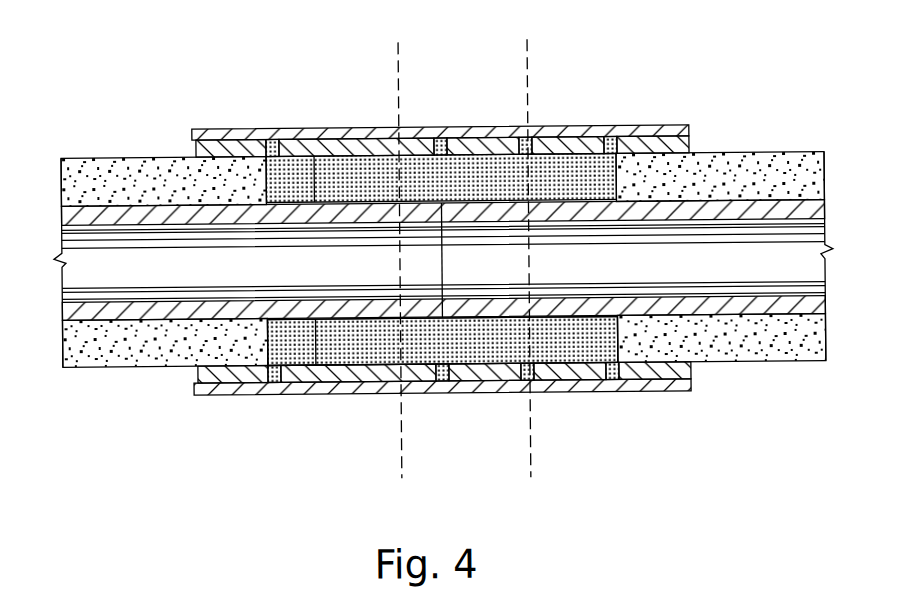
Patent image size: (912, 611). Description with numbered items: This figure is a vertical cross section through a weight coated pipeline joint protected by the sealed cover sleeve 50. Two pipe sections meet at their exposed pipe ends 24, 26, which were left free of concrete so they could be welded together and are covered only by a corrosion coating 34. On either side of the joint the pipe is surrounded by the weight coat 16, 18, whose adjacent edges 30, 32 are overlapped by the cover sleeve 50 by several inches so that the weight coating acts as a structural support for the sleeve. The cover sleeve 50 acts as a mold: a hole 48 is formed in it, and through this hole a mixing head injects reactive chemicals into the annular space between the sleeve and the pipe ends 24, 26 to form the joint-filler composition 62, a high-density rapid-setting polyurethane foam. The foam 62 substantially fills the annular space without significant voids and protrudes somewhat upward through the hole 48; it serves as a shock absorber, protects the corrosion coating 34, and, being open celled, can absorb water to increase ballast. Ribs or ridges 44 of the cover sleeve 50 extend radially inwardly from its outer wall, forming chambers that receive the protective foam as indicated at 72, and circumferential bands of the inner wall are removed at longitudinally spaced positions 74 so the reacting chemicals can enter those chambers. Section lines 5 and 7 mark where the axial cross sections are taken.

The weight coat 16 is at (117, 342).
The weight coat 18 is at (776, 348).
The pipe end 24 is at (293, 393).
The pipe end 26 is at (608, 392).
The edge of weight coat 30 is at (233, 180).
The edge of weight coat 32 is at (645, 180).
The corrosion coating 34 is at (333, 126).
The ribs or ridges 44 is at (387, 126).
The hole 48 is at (443, 150).
The sealed cover sleeve 50 is at (575, 127).
The joint-filler composition 62 is at (477, 190).
The protective foam substance in chambers 72 is at (274, 393).
The removed circumferential bands of inner wall 74 is at (267, 126).
The section line 5- 5 is at (418, 38).
The section line 7- 7 is at (547, 36).